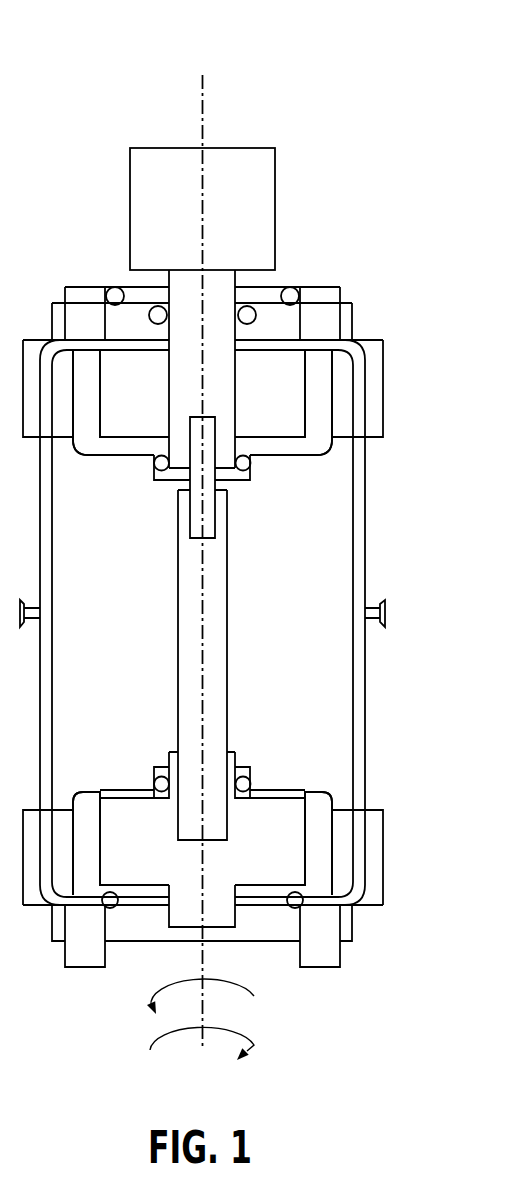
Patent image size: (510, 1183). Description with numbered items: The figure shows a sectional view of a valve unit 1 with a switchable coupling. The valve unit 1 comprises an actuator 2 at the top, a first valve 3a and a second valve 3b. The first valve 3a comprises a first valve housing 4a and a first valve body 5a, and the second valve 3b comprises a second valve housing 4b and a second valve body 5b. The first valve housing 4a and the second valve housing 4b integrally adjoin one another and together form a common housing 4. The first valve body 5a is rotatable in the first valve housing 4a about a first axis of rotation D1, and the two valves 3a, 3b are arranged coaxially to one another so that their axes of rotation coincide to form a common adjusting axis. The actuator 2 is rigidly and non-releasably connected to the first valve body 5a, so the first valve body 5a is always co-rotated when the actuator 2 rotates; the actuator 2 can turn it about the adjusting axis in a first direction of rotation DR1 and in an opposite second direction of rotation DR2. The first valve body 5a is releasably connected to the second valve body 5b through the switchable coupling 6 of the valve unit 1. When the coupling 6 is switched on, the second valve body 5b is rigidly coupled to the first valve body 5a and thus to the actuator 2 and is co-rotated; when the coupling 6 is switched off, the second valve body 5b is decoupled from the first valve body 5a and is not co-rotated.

The valve unit 1 is at (366, 180).
The actuator 2 is at (253, 213).
The first valve 3a is at (386, 332).
The second valve 3b is at (386, 786).
The common housing 4 is at (202, 622).
The first valve housing 4a is at (357, 455).
The second valve housing 4b is at (357, 857).
The first valve body 5a is at (272, 402).
The second valve body 5b is at (273, 857).
The switchable coupling 6 is at (250, 580).
The first axis of rotation D1 is at (207, 110).
The first direction of rotation DR1 is at (258, 1043).
The second direction of rotation DR2 is at (258, 997).